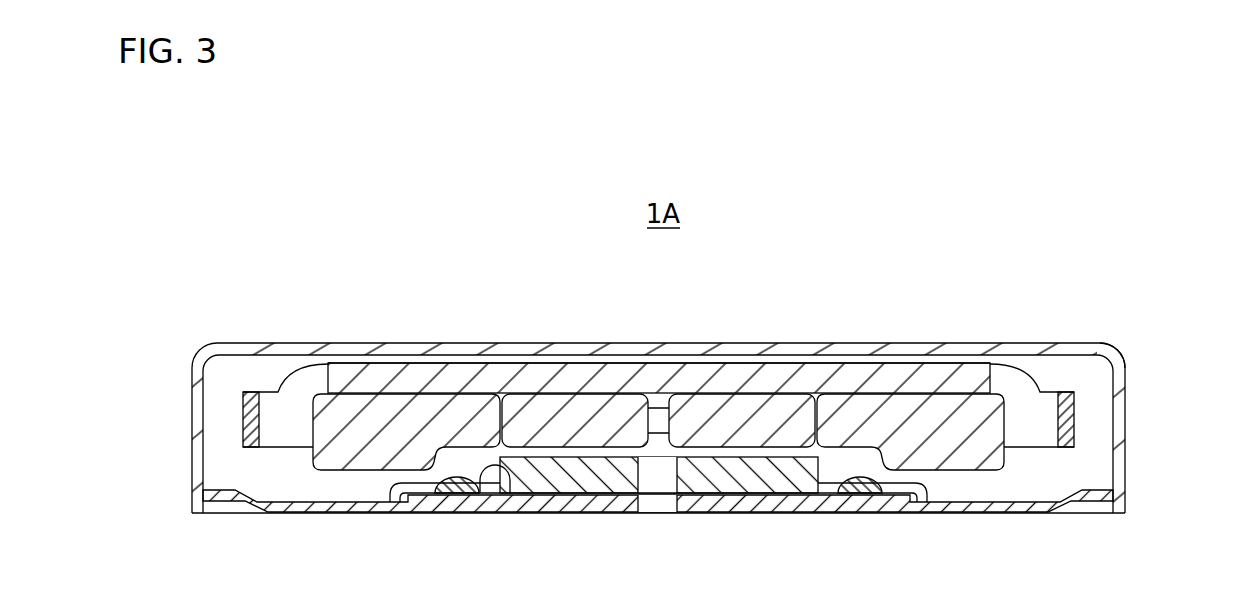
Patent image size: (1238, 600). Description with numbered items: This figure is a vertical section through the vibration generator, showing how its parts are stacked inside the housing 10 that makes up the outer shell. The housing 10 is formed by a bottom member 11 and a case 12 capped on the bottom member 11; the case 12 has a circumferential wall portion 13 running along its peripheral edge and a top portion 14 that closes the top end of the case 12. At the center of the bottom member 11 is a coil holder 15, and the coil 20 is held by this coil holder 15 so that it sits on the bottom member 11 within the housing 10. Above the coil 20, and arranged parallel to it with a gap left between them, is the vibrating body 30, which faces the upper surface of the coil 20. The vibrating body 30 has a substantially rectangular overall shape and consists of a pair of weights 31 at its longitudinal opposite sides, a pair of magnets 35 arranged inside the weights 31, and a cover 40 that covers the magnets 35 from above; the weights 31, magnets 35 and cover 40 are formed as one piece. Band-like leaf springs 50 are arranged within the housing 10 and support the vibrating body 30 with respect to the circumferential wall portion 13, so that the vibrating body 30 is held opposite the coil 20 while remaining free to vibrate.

The housing 10 is at (696, 382).
The bottom member 11 is at (1072, 513).
The case 12 is at (928, 343).
The circumferential wall portion 13 is at (1127, 408).
The top portion 14 is at (967, 343).
The coil holder 15 is at (508, 462).
The coil 20 is at (782, 485).
The vibrating body 30 is at (830, 362).
The weights 31 is at (362, 470).
The magnets 35 is at (574, 392).
The cover 40 is at (664, 362).
The leaf springs 50 is at (241, 421).